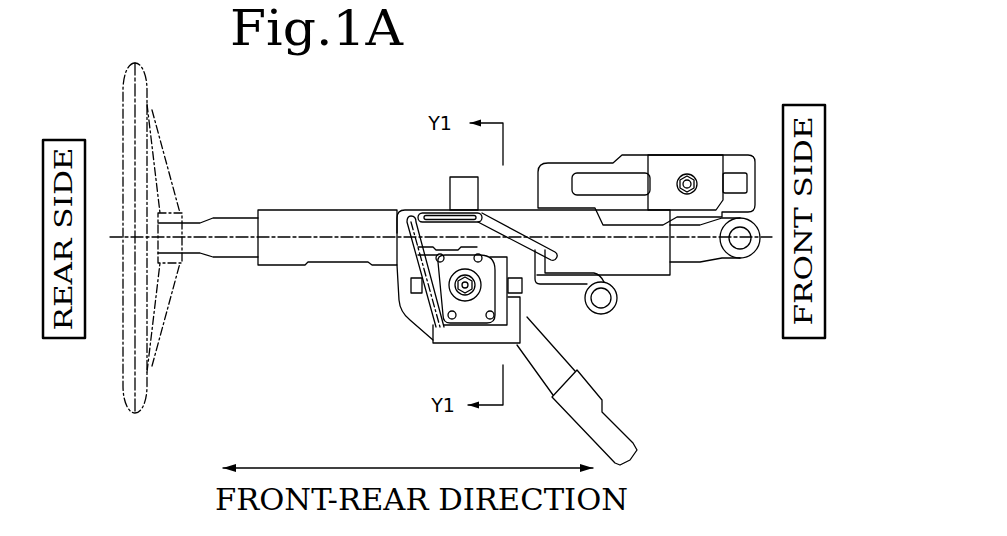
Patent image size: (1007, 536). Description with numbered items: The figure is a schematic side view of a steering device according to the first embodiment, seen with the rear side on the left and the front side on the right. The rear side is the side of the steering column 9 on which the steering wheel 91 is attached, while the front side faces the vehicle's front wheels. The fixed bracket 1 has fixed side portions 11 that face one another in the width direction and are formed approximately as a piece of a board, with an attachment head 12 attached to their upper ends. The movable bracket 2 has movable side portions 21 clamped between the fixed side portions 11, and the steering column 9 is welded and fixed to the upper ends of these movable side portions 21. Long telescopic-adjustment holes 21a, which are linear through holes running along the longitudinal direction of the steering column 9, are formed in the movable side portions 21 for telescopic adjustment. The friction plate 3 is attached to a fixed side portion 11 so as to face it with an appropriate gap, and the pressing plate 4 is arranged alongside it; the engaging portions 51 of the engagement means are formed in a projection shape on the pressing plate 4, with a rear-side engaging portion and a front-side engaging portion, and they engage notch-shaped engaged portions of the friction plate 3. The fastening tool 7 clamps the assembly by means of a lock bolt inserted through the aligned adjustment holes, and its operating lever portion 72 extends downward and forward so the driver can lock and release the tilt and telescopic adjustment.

The fixed bracket 1 is at (402, 219).
The movable bracket 2 is at (402, 311).
The friction plate 3 is at (490, 242).
The pressing plate 4 is at (470, 318).
The fastening tool 7 is at (606, 398).
The steering column 9 is at (327, 204).
The fixed side portion 11 is at (563, 282).
The attachment head 12 is at (457, 177).
The movable side portion 21 is at (423, 318).
The long telescopic-adjustment hole 21a is at (410, 283).
The engaging portion 51 is at (442, 290).
The operating lever portion 72 is at (542, 347).
The steering wheel 91 is at (167, 313).